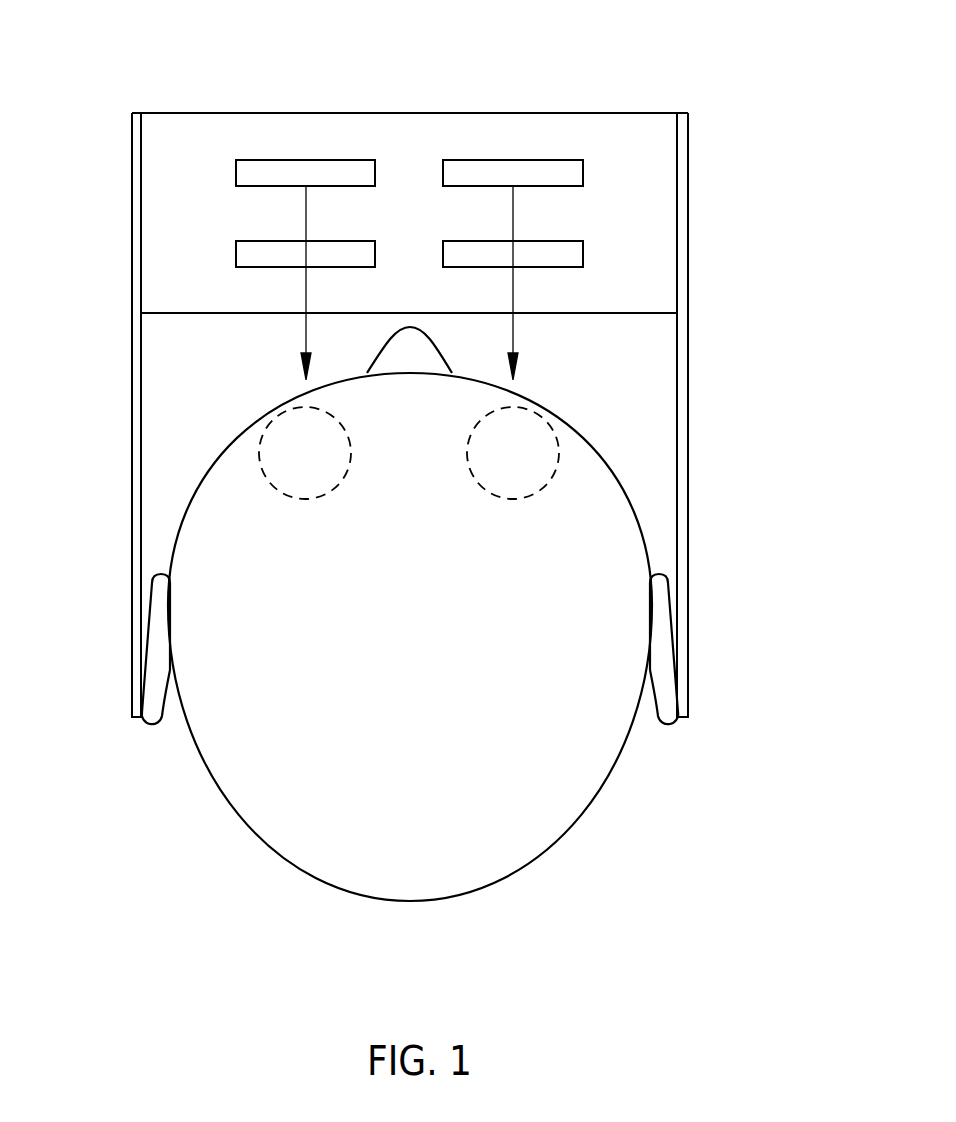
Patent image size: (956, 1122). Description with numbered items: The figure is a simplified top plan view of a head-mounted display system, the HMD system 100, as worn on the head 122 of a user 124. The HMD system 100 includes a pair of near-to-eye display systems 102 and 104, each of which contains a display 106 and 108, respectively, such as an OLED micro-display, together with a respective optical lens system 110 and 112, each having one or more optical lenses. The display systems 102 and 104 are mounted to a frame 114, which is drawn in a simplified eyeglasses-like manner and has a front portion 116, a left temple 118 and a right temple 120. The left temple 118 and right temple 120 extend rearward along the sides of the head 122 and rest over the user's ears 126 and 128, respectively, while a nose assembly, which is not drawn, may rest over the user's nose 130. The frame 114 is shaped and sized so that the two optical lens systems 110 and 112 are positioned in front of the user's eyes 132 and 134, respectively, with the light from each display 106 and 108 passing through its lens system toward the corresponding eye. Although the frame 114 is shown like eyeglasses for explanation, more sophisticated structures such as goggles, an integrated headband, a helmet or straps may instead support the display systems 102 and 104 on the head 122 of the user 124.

The HMD system 100 is at (748, 58).
The near-to-eye display system 102 is at (205, 175).
The near-to-eye display system 104 is at (615, 177).
The display 106 is at (342, 160).
The display 108 is at (505, 160).
The optical lens system 110 is at (236, 252).
The optical lens system 112 is at (583, 253).
The frame 114 is at (137, 112).
The front portion 116 is at (253, 128).
The left temple 118 is at (132, 560).
The right temple 120 is at (690, 545).
The head 122 is at (495, 883).
The user 124 is at (640, 842).
The ear 126 is at (150, 718).
The ear 128 is at (670, 718).
The nose 130 is at (435, 345).
The eye 132 is at (260, 463).
The eye 134 is at (555, 473).